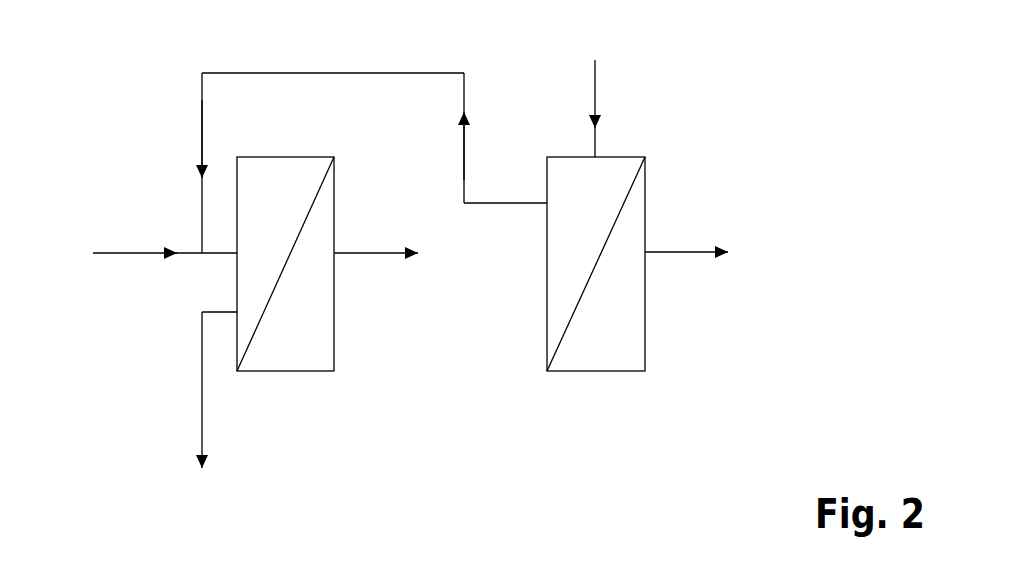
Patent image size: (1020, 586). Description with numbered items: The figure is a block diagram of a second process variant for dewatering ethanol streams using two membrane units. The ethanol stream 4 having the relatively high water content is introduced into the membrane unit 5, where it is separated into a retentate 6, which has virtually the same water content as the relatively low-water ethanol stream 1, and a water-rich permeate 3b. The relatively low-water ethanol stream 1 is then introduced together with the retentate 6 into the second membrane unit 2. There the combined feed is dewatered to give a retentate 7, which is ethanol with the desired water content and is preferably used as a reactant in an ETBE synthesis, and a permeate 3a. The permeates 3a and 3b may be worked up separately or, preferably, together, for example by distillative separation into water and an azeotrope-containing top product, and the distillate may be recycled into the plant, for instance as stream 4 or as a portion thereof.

The ethanol stream with relatively low water content 1 is at (146, 247).
The membrane unit 2 is at (285, 264).
The permeate 3a is at (410, 251).
The permeate 3b is at (719, 252).
The ethanol stream with relatively high water content 4 is at (597, 83).
The membrane unit 5 is at (596, 264).
The retentate 6 is at (374, 131).
The retentate 7 is at (213, 419).